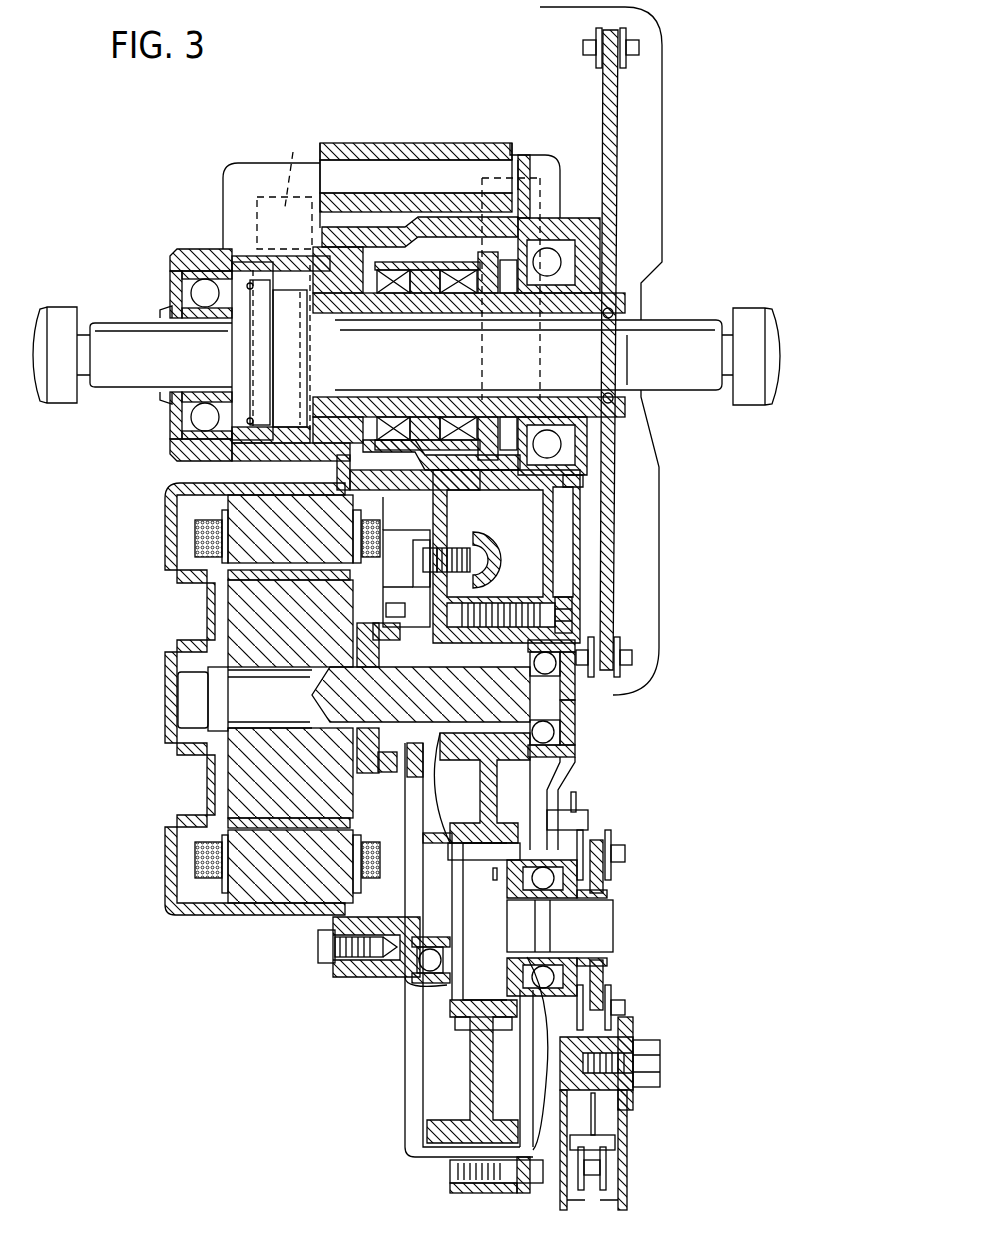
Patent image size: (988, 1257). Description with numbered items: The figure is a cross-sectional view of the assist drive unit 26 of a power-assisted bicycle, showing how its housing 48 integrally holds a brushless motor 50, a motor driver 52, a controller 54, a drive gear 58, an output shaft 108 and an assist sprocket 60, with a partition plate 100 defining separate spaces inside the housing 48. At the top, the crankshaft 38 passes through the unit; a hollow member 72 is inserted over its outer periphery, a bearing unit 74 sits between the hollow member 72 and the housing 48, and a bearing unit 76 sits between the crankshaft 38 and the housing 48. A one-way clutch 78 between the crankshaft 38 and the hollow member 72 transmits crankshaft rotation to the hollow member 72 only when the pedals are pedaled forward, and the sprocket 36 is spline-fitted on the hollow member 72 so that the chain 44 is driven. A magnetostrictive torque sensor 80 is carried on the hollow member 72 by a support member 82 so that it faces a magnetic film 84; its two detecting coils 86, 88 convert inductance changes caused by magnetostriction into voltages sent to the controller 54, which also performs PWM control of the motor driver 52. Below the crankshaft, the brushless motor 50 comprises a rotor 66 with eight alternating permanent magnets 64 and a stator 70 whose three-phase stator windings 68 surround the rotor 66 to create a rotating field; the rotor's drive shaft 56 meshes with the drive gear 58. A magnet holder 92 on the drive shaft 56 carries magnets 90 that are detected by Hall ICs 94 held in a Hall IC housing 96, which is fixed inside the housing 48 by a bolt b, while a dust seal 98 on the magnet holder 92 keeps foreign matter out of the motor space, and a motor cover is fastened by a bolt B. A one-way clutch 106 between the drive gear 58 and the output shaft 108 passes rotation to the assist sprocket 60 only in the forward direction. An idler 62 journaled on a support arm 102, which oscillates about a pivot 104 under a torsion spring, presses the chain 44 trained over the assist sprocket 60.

The assist drive unit 26 is at (342, 988).
The sprocket 36 is at (618, 132).
The crankshaft 38 is at (681, 336).
The chain 44 is at (636, 52).
The housing 48 is at (229, 157).
The brushless motor 50 is at (190, 725).
The motor driver 52 is at (284, 185).
The controller 54 is at (494, 160).
The drive shaft 56 is at (550, 700).
The drive gear 58 is at (497, 770).
The assist sprocket 60 is at (603, 874).
The idler 62 is at (600, 1197).
The permanent magnets 64 is at (240, 583).
The rotor 66 is at (263, 630).
The stator windings 68 is at (200, 857).
The stator 70 is at (273, 882).
The hollow member 72 is at (244, 250).
The bearing unit 74 is at (557, 253).
The bearing unit 76 is at (194, 292).
The one-way clutch 78 is at (231, 329).
The magnetostrictive torque sensor 80 is at (392, 277).
The support member 82 is at (345, 262).
The magnetic film 84 is at (478, 300).
The detecting coil 86 is at (388, 297).
The detecting coil 88 is at (443, 297).
The magnet 90 is at (363, 628).
The magnet holder 92 is at (383, 774).
The Hall IC 94 is at (392, 603).
The Hall IC housing 96 is at (397, 545).
The dust seal 98 is at (442, 757).
The partition plate 100 is at (490, 485).
The support arm 102 is at (623, 1137).
The pivot 104 is at (603, 1092).
The one-way clutch 106 is at (390, 1008).
The output shaft 108 is at (600, 932).
The bolt b is at (432, 566).
The bolt B is at (323, 957).